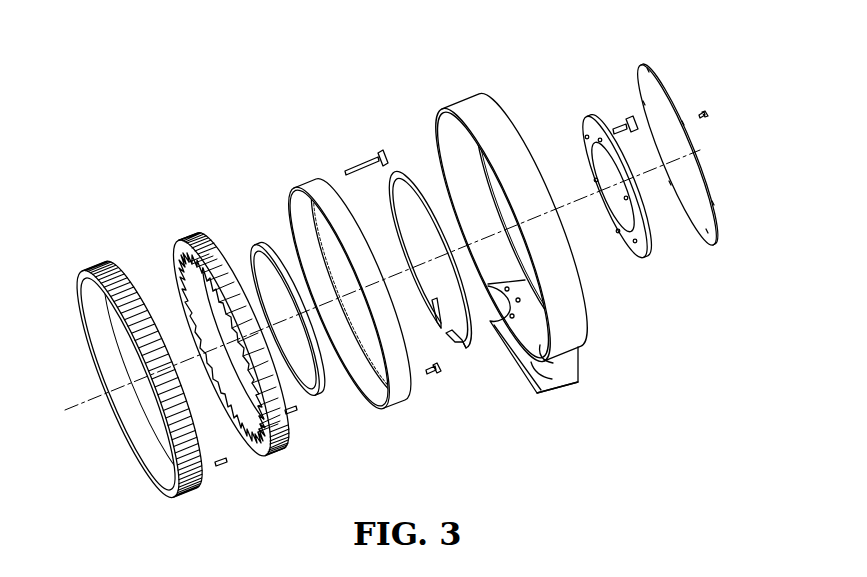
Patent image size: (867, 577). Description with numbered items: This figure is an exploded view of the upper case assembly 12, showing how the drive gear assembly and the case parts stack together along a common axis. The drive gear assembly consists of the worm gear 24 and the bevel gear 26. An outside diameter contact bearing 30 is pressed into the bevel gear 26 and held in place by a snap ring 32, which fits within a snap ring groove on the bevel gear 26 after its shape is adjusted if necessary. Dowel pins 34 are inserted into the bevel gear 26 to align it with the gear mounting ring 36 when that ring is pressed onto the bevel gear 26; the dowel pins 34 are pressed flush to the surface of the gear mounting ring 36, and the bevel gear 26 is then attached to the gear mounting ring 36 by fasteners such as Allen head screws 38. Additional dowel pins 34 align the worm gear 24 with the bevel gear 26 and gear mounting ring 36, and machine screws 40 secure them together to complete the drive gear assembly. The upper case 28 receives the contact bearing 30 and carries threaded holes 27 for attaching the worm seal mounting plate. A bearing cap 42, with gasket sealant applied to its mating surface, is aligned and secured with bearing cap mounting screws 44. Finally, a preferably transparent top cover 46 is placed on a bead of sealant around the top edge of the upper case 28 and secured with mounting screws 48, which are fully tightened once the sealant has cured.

The upper case assembly 12 is at (363, 67).
The worm gear 24 is at (113, 263).
The bevel gear 26 is at (197, 250).
The threaded holes 27 is at (568, 385).
The upper case 28 is at (470, 100).
The outside diameter contact bearing 30 is at (266, 244).
The snap ring 32 is at (415, 172).
The dowel pins 34 is at (222, 468).
The gear mounting ring 36 is at (310, 173).
The Allen head screws 38 is at (437, 375).
The machine screws 40 is at (373, 155).
The bearing cap 42 is at (582, 128).
The bearing cap mounting screws 44 is at (628, 123).
The top cover 46 is at (692, 200).
The mounting screws 48 is at (698, 110).